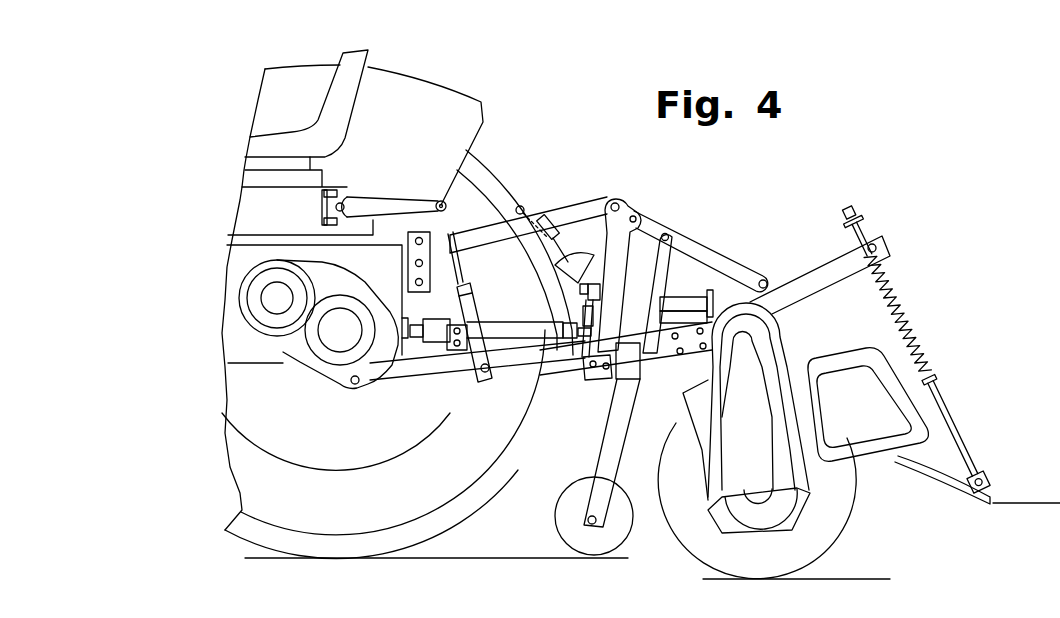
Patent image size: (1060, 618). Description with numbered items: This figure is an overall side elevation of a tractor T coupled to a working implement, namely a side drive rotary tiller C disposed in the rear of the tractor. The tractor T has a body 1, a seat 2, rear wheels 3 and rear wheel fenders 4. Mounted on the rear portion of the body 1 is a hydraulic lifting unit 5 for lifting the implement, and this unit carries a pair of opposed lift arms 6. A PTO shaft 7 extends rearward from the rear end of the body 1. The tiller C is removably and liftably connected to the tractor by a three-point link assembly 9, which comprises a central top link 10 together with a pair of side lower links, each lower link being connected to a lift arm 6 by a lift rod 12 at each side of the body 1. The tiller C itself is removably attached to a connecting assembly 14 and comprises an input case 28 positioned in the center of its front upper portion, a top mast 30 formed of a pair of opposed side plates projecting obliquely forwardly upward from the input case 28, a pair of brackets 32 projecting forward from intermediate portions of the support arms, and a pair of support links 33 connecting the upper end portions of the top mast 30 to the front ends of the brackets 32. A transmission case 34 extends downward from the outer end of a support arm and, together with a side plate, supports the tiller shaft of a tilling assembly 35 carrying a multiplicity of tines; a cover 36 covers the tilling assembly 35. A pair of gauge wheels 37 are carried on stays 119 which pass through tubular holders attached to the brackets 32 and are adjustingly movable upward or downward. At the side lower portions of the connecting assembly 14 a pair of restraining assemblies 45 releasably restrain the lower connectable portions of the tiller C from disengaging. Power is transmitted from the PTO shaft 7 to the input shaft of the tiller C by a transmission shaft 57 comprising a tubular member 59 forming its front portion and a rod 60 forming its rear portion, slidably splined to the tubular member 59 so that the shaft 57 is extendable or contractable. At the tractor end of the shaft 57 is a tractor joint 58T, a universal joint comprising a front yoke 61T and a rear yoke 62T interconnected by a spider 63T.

The body 1 is at (228, 361).
The seat 2 is at (357, 55).
The rear wheels 3 is at (488, 188).
The rear wheel fenders 4 is at (465, 108).
The hydraulic lifting unit 5 is at (240, 216).
The lift arms 6 is at (400, 206).
The PTO shaft 7 is at (410, 327).
The three-point link assembly 9 is at (527, 378).
The top link 10 is at (575, 213).
The lift rod 12 is at (476, 312).
The connecting assembly 14 is at (626, 213).
The input case 28 is at (760, 300).
The top mast 30 is at (758, 204).
The brackets 32 is at (656, 362).
The support links 33 is at (657, 281).
The transmission case 34 is at (780, 460).
The tilling assembly 35 is at (852, 530).
The cover 36 is at (833, 366).
The gauge wheels 37 is at (612, 543).
The restraining assemblies 45 is at (607, 386).
The transmission shaft 57 is at (552, 342).
The tractor joint 58T is at (418, 352).
The tubular member 59 is at (515, 335).
The rod 60 is at (565, 325).
The front yoke 61T is at (440, 345).
The rear yoke 62T is at (467, 355).
The spider 63T is at (460, 355).
The stay 119 is at (623, 439).
The tractor T is at (227, 292).
The side drive rotary tiller C is at (957, 410).